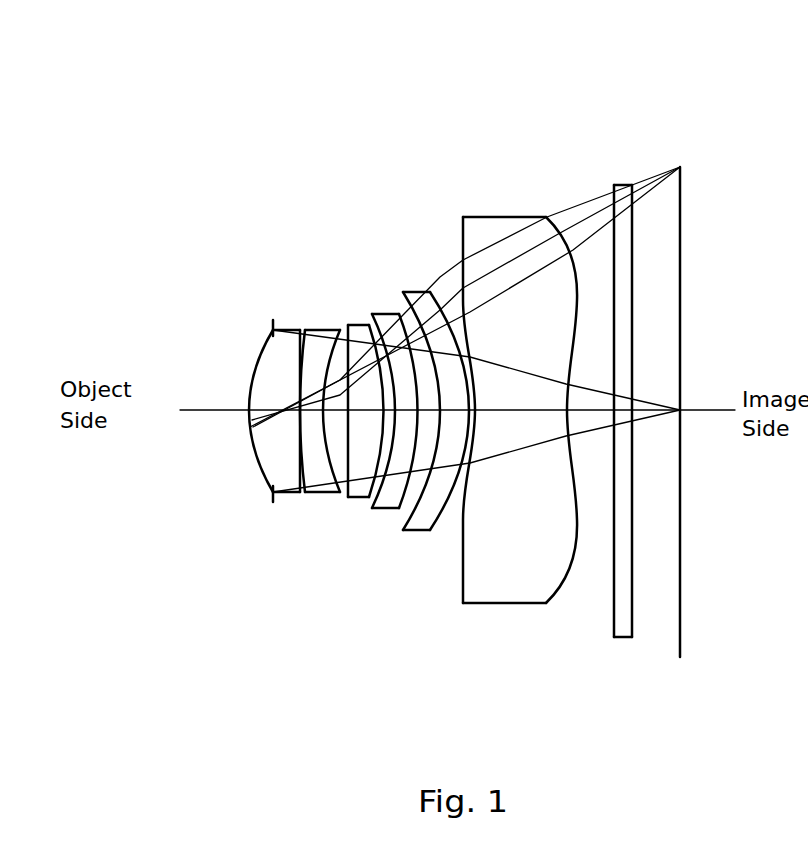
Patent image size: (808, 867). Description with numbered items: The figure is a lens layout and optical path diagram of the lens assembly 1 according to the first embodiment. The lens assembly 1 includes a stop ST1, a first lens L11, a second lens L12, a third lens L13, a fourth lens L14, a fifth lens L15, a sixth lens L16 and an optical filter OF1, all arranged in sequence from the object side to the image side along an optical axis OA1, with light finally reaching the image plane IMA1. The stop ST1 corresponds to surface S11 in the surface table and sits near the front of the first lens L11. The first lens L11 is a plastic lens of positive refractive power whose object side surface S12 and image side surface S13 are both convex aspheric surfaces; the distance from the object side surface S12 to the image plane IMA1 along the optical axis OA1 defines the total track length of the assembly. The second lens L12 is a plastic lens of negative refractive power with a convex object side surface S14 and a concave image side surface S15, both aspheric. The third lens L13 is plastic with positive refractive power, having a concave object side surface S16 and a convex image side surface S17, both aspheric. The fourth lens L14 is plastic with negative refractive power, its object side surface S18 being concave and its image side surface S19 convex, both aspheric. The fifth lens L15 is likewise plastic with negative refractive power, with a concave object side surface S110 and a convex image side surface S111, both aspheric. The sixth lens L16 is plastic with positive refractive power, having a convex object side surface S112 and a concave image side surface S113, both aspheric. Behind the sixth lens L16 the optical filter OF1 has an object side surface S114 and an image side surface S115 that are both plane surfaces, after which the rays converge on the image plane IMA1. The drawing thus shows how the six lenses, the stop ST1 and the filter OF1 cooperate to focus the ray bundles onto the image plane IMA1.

The lens assembly 1 is at (53, 103).
The optical axis OA1 is at (217, 410).
The stop ST1 is at (277, 323).
The first lens L11 is at (263, 396).
The second lens L12 is at (328, 419).
The third lens L13 is at (379, 381).
The fourth lens L14 is at (437, 375).
The fifth lens L15 is at (478, 404).
The sixth lens L16 is at (554, 407).
The optical filter OF1 is at (677, 422).
The image plane IMA1 is at (707, 368).
The stop surface S11 is at (275, 493).
The object side surface of the first lens S12 is at (262, 472).
The image side surface of the first lens S13 is at (305, 493).
The object side surface of the second lens S14 is at (313, 492).
The image side surface of the second lens S15 is at (318, 492).
The object side surface of the third lens S16 is at (355, 497).
The image side surface of the third lens S17 is at (372, 508).
The object side surface of the fourth lens S18 is at (383, 508).
The image side surface of the fourth lens S19 is at (412, 530).
The object side surface of the fifth lens S110 is at (433, 530).
The image side surface of the fifth lens S111 is at (466, 520).
The object side surface of the sixth lens S112 is at (570, 560).
The image side surface of the sixth lens S113 is at (613, 600).
The object side surface of the optical filter S114 is at (632, 613).
The image side surface of the optical filter S115 is at (680, 657).